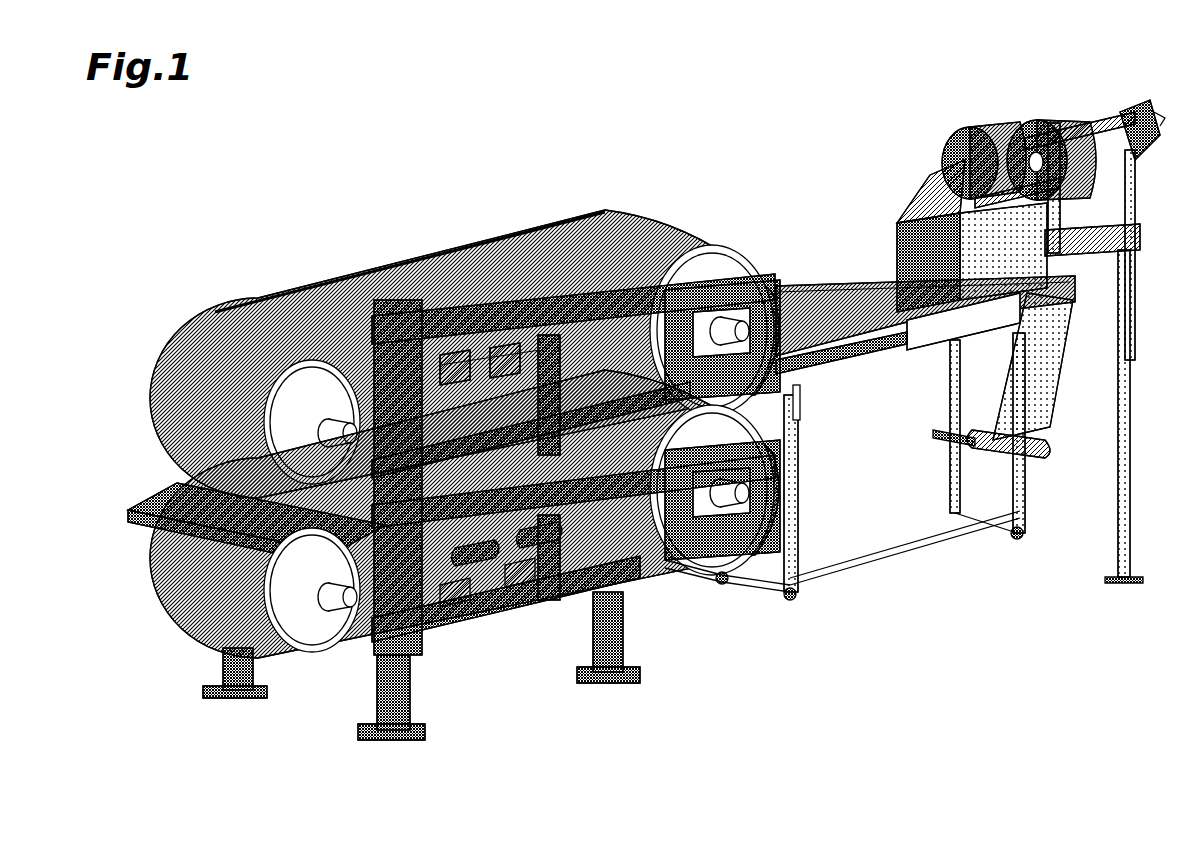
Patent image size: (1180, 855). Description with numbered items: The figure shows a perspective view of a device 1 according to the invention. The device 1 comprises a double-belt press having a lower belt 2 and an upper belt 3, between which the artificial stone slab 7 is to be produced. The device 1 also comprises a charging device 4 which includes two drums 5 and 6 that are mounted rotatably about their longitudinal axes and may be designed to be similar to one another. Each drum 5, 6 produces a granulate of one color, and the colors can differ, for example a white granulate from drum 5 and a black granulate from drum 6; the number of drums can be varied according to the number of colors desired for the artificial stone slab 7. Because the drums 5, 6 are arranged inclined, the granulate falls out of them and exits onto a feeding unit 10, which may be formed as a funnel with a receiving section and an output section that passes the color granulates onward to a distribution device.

The device 1 is at (474, 172).
The lower belt 2 is at (277, 667).
The upper belt 3 is at (372, 300).
The charging device 4 is at (904, 114).
The drum 5 is at (970, 132).
The drum 6 is at (1027, 117).
The artificial stone slab 7 is at (168, 492).
The feeding unit 10 is at (937, 186).